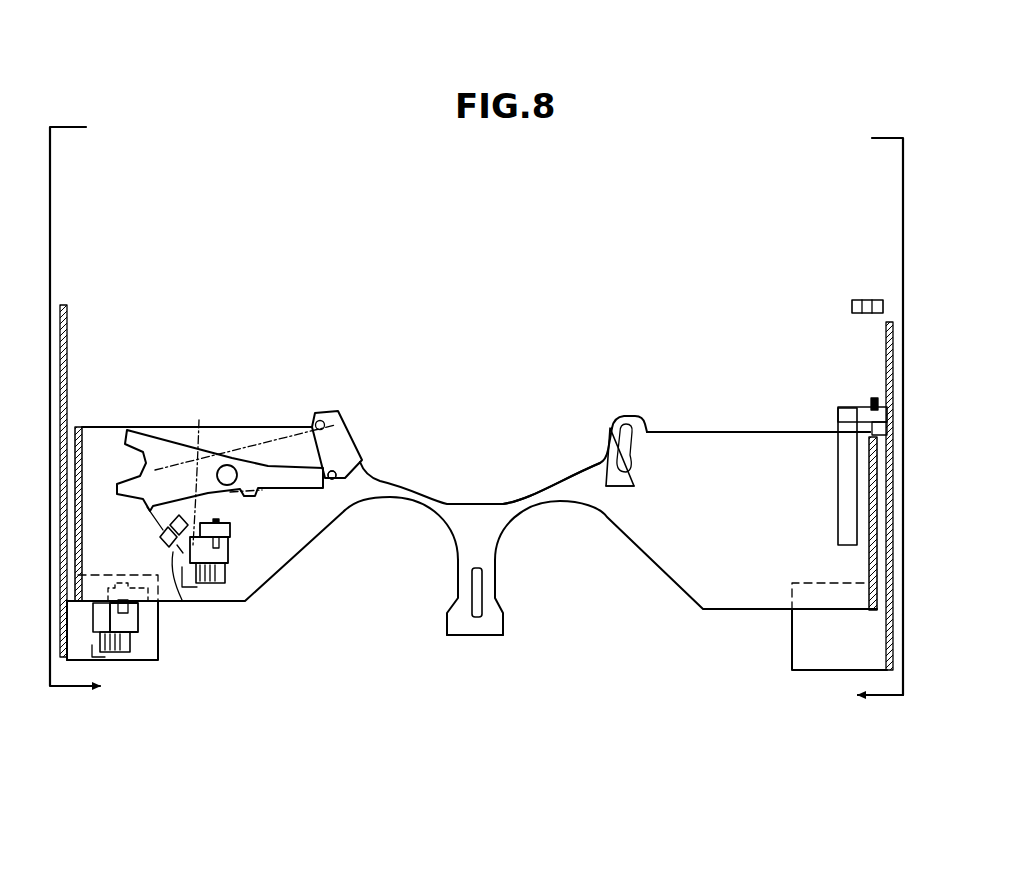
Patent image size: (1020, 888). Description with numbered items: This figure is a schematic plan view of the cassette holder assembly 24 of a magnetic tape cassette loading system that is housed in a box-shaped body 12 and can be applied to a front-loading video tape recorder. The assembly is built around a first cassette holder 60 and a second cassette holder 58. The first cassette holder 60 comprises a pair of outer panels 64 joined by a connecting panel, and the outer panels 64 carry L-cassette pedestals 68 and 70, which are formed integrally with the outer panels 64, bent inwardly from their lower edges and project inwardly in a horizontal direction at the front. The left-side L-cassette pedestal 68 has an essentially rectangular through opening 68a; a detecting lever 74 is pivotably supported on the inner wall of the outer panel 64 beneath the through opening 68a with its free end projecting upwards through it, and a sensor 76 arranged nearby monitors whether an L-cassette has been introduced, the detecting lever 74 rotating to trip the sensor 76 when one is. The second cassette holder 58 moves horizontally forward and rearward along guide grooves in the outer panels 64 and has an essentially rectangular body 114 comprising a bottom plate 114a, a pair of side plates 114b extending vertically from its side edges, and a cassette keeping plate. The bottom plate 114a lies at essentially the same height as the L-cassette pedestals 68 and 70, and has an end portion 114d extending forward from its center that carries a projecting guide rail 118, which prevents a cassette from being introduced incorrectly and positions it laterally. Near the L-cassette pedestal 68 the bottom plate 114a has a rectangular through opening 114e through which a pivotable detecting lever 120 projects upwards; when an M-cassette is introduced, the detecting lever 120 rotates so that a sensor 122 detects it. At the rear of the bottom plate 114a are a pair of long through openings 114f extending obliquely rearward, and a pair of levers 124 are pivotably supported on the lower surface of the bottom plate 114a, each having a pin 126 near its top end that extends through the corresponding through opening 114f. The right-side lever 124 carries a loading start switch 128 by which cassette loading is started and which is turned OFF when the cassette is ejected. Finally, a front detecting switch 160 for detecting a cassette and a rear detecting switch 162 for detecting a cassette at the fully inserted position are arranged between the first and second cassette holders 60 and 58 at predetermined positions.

The body 12 is at (76, 119).
The cassette holder assembly 24 is at (485, 700).
The second cassette holder 58 is at (551, 458).
The first cassette holder 60 is at (845, 688).
The outer panels 64 is at (67, 352).
The L-cassette pedestal 68 is at (152, 665).
The through opening 68a is at (93, 615).
The L-cassette pedestal 70 is at (828, 655).
The detecting lever 74 is at (126, 657).
The sensor 76 is at (163, 632).
The body 114 is at (730, 614).
The bottom plate 114a is at (708, 460).
The side plates 114b is at (82, 455).
The end portion 114d is at (475, 630).
The through opening 114e is at (198, 422).
The through openings 114f is at (337, 452).
The guide rail 118 is at (478, 590).
The detecting lever 120 is at (217, 555).
The sensor 122 is at (228, 530).
The levers 124 is at (297, 470).
The pin 126 is at (342, 472).
The loading start switch 128 is at (165, 545).
The front detecting switch 160 is at (868, 404).
The rear detecting switch 162 is at (860, 298).